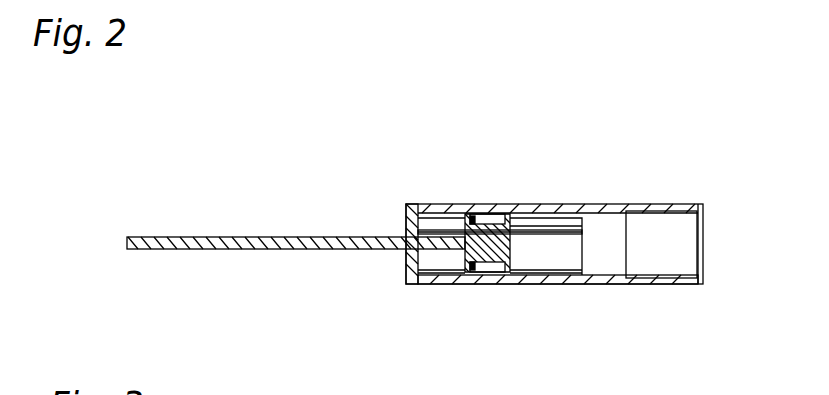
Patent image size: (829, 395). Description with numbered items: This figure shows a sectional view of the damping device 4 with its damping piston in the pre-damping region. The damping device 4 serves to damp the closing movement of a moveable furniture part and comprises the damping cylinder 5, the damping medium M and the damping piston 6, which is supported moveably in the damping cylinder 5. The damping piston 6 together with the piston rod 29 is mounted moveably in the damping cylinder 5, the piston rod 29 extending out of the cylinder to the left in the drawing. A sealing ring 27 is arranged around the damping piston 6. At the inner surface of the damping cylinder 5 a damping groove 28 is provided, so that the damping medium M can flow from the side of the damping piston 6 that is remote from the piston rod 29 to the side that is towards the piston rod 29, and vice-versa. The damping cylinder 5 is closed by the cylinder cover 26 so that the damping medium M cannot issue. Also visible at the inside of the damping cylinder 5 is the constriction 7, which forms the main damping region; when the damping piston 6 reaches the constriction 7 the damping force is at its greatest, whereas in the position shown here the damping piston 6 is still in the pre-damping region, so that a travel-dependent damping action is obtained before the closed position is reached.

The damping device 4 is at (550, 163).
The damping cylinder 5 is at (565, 211).
The damping piston 6 is at (503, 264).
The constriction 7 is at (600, 276).
The cylinder cover 26 is at (410, 216).
The sealing ring 27 is at (488, 217).
The damping groove 28 is at (562, 235).
The piston rod 29 is at (282, 249).
The damping medium M is at (655, 252).